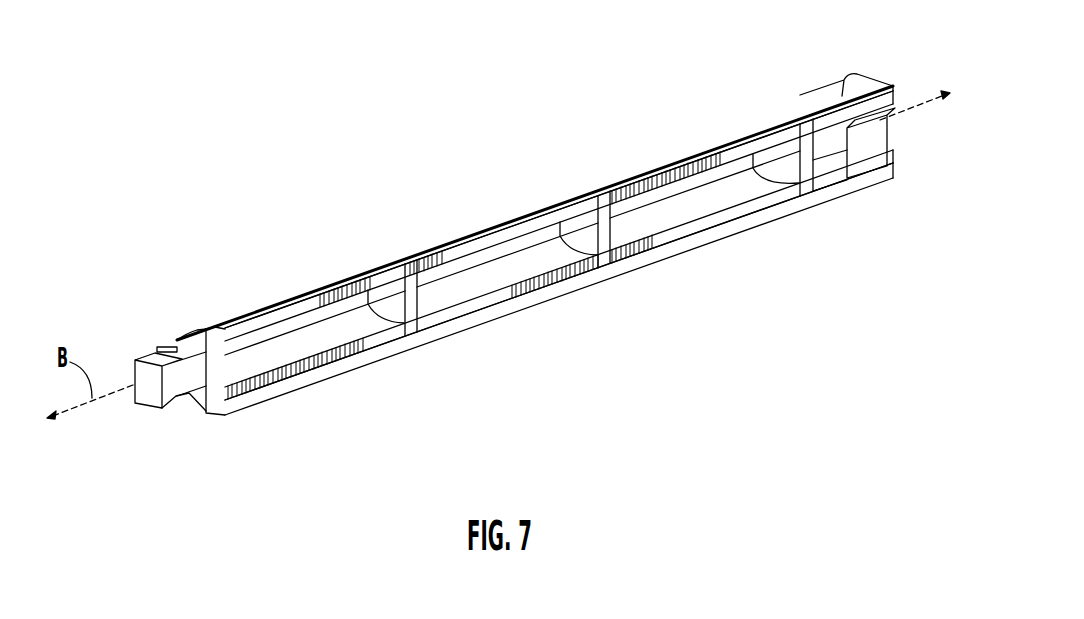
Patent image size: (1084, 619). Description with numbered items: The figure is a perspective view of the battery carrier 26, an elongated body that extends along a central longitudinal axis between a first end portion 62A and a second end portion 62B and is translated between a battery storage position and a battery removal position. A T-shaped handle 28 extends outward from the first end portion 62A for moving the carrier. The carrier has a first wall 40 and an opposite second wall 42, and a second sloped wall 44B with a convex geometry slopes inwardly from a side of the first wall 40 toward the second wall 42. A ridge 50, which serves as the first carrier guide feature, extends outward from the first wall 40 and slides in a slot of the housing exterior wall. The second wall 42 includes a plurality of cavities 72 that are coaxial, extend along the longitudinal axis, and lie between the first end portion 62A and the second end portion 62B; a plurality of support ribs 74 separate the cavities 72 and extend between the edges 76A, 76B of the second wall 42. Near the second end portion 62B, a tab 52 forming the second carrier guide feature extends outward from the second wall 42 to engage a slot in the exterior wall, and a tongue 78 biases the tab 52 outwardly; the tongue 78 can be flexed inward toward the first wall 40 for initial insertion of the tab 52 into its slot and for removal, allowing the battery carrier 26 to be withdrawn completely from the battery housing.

The battery carrier 26 is at (341, 219).
The T-shaped handle 28 is at (150, 398).
The first wall 40 is at (483, 260).
The second wall 42 is at (273, 318).
The second sloped wall 44B is at (334, 346).
The ridge 50 is at (162, 352).
The tab 52 is at (878, 147).
The first end portion 62A is at (194, 412).
The second end portion 62B is at (887, 83).
The cavities 72 is at (316, 359).
The support ribs 74 is at (412, 312).
The first edge of the second wall 76A is at (583, 196).
The second edge of the second wall 76B is at (581, 296).
The tongue 78 is at (813, 168).